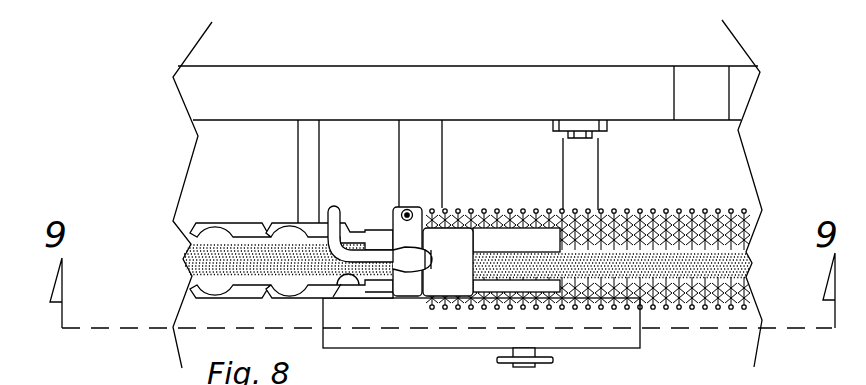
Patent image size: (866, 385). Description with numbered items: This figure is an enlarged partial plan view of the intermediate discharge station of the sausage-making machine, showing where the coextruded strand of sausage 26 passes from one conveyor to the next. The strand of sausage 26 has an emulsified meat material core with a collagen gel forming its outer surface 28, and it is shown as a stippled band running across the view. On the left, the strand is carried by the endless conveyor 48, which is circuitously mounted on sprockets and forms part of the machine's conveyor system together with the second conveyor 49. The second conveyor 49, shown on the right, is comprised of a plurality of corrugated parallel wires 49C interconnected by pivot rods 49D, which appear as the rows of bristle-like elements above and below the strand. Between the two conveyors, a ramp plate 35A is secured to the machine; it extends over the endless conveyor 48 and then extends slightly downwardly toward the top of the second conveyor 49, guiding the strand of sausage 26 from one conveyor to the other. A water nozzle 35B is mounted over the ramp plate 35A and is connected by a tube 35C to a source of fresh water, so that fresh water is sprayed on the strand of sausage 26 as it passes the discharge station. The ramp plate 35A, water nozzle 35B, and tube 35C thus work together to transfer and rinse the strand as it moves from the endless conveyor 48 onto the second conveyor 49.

The strand of sausage 26 is at (758, 263).
The outer surface 28 is at (188, 252).
The ramp plate 35A is at (503, 238).
The water nozzle 35B is at (436, 214).
The tube 35C is at (333, 207).
The endless conveyor 48 is at (238, 233).
The second conveyor 49 is at (612, 267).
The corrugated parallel wires 49C is at (672, 308).
The pivot rods 49D is at (679, 209).